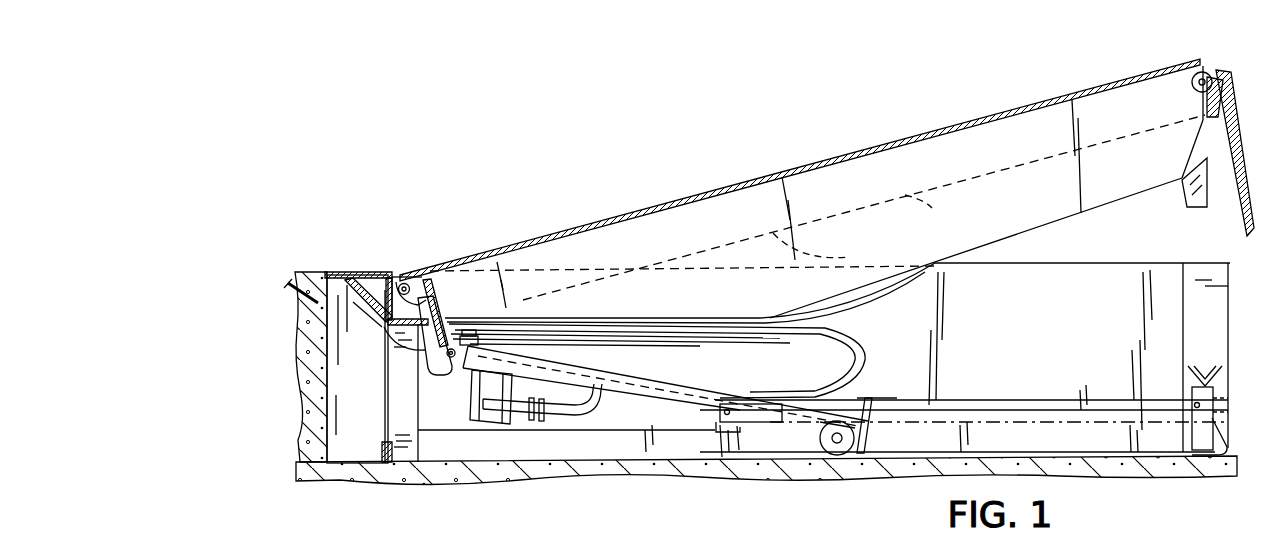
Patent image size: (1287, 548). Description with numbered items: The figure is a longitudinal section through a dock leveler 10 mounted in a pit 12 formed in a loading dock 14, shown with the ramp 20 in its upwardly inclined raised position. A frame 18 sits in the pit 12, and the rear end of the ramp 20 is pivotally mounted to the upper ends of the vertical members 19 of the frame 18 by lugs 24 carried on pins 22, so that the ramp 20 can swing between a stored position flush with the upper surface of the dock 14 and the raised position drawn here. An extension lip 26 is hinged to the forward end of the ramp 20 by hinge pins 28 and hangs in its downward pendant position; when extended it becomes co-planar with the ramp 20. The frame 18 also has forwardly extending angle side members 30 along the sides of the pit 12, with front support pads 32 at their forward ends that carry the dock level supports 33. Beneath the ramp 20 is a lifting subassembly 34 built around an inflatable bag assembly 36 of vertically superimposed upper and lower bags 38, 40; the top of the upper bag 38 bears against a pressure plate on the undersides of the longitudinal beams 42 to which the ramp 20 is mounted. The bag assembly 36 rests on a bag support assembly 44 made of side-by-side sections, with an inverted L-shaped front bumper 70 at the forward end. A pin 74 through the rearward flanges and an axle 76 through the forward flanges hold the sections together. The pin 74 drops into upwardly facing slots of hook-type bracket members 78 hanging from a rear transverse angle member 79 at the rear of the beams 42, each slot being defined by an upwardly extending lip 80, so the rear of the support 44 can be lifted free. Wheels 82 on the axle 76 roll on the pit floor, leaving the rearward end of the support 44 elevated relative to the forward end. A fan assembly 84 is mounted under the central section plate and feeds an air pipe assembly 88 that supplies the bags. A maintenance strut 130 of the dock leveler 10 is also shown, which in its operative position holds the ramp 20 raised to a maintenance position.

The dock leveler 10 is at (1030, 99).
The pit 12 is at (1038, 347).
The loading dock 14 is at (304, 274).
The frame 18 is at (386, 347).
The vertical members 19 is at (392, 398).
The ramp 20 is at (731, 179).
The pins 22 is at (418, 286).
The lugs 24 is at (377, 285).
The extension lip 26 is at (1240, 133).
The hinge pins 28 is at (1214, 75).
The side members 30 is at (1013, 420).
The front support pads 32 is at (1220, 388).
The dock level supports 33 is at (1195, 212).
The lifting subassembly 34 is at (941, 330).
The bag assembly 36 is at (852, 342).
The upper bag 38 is at (880, 300).
The lower bag 40 is at (860, 366).
The beams 42 is at (918, 198).
The bag support assembly 44 is at (668, 402).
The front bumper 70 is at (868, 400).
The pin 74 is at (398, 340).
The axle 76 is at (836, 452).
The bracket members 78 is at (441, 378).
The rear transverse angle member 79 is at (445, 303).
The lip 80 is at (462, 367).
The wheels 82 is at (872, 453).
The fan assembly 84 is at (494, 426).
The air pipe assembly 88 is at (598, 412).
The maintenance strut 130 is at (983, 400).